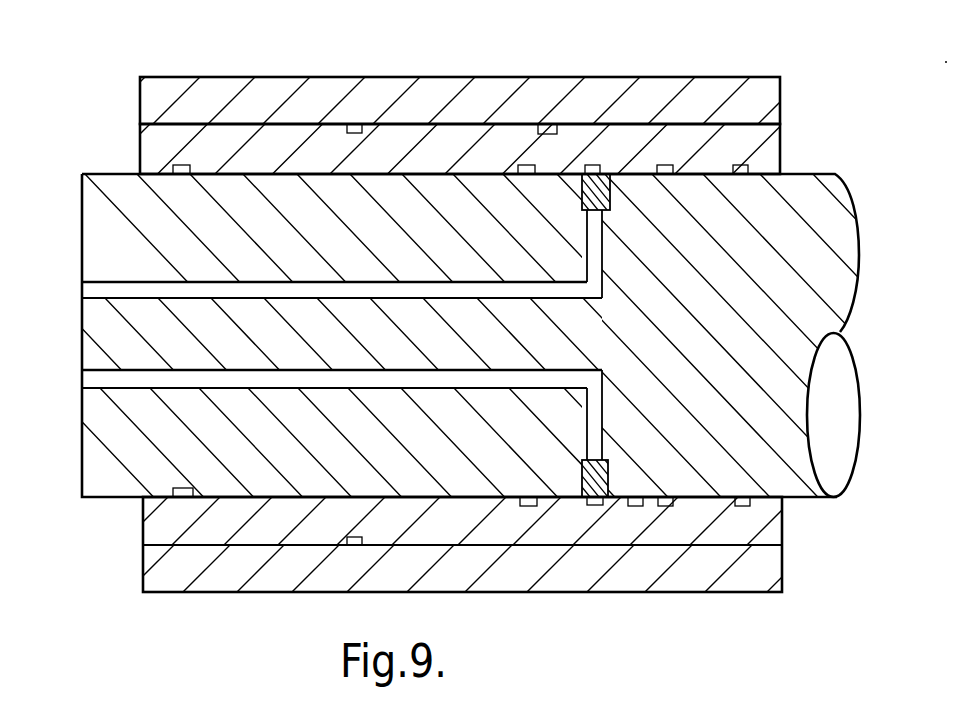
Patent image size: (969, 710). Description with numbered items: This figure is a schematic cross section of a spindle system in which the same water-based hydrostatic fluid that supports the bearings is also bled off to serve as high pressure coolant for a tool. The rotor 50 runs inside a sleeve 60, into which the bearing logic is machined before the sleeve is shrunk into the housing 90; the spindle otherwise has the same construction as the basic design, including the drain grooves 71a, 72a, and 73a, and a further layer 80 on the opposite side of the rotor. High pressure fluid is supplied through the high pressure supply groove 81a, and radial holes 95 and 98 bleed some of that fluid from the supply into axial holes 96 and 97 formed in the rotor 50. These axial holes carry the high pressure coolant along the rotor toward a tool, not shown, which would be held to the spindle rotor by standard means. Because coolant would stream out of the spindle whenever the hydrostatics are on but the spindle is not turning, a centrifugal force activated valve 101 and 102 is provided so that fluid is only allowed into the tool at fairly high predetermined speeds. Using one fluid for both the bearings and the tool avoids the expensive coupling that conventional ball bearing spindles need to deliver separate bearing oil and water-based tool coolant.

The rotor 50 is at (108, 221).
The sleeve 60 is at (155, 149).
The housing 90 is at (155, 109).
The lower layer 80 is at (660, 497).
The drain groove 71a is at (187, 168).
The drain groove 72a is at (528, 168).
The drain groove 73a is at (745, 165).
The high pressure supply groove 81a is at (580, 494).
The radial hole 95 is at (603, 257).
The axial hole 96 is at (350, 287).
The axial hole 97 is at (340, 378).
The radial hole 98 is at (592, 443).
The centrifugal force activated valve 101 is at (592, 473).
The centrifugal force activated valve 102 is at (610, 195).